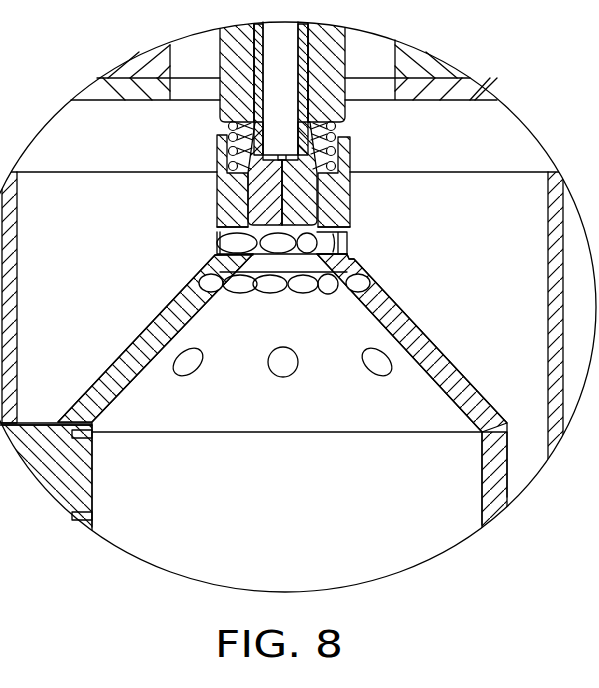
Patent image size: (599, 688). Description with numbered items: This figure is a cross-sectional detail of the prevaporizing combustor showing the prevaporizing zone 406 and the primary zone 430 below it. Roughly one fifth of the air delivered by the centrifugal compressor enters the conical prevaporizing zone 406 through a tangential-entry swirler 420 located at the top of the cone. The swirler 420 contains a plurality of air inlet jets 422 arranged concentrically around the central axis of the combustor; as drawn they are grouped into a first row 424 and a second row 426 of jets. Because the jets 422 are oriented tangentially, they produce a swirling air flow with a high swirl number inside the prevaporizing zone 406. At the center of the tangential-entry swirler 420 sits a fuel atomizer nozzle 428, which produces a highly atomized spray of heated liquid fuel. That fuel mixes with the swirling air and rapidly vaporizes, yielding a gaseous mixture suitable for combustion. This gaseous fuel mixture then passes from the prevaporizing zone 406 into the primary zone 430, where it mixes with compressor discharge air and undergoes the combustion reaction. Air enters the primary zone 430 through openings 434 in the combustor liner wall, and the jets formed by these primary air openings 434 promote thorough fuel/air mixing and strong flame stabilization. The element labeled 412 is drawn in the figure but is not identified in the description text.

The prevaporizing zone 406 is at (262, 288).
The piston 412 is at (308, 190).
The tangential-entry swirler 420 is at (352, 257).
The air inlet jets 422 is at (213, 260).
The first row 424 is at (330, 232).
The second row 426 is at (370, 283).
The fuel atomizer nozzle 428 is at (268, 226).
The primary zone 430 is at (420, 411).
The openings 434 is at (192, 366).